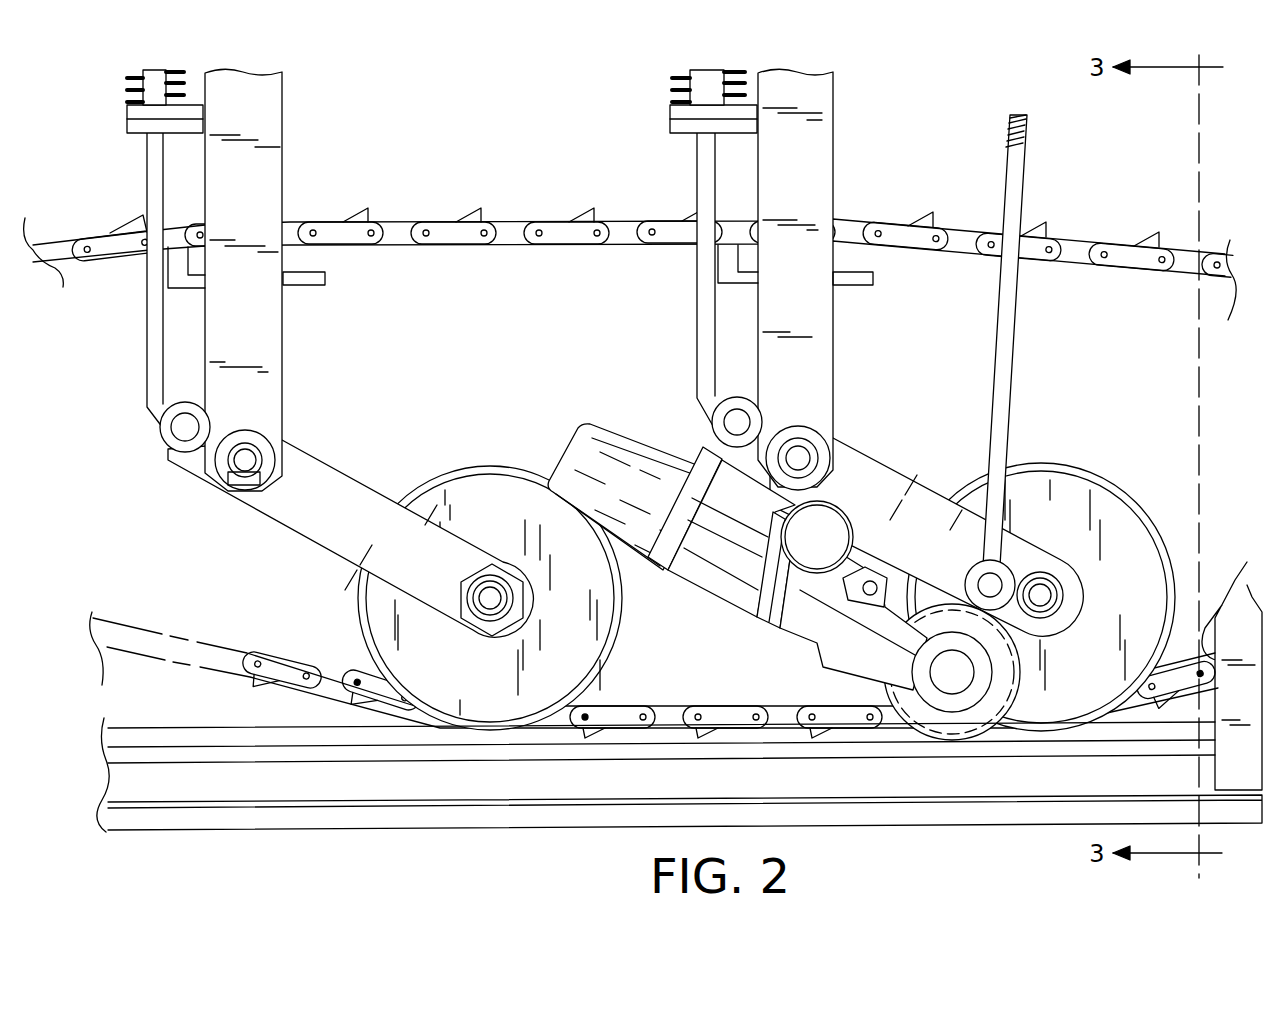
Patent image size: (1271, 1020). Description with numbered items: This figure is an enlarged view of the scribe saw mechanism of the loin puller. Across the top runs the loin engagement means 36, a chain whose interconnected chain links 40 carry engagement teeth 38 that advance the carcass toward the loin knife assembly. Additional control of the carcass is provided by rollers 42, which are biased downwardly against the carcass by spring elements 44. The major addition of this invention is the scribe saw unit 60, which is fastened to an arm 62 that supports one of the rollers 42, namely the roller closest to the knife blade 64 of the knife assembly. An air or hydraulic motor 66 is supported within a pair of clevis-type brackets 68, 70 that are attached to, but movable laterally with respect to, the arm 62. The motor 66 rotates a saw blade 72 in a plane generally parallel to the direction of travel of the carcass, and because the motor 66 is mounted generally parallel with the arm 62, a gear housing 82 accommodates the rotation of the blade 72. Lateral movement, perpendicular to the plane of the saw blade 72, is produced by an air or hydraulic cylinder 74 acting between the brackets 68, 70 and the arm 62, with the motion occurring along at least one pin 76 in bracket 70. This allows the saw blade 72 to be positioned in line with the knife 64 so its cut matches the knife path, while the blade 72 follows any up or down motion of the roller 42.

The loin engagement means 36 is at (430, 215).
The engagement teeth 38 is at (590, 207).
The chain links 40 is at (905, 224).
The rollers 42 is at (1082, 465).
The spring elements 44 is at (697, 180).
The scribe saw unit 60 is at (744, 598).
The arm 62 is at (938, 487).
The knife blade 64 is at (1232, 669).
The air or hydraulic motor 66 is at (586, 424).
The clevis-type bracket 68 is at (718, 460).
The clevis-type bracket 70 is at (828, 664).
The saw blade 72 is at (948, 735).
The air or hydraulic cylinder 74 is at (760, 598).
The pin 76 is at (876, 580).
The gear housing 82 is at (953, 712).